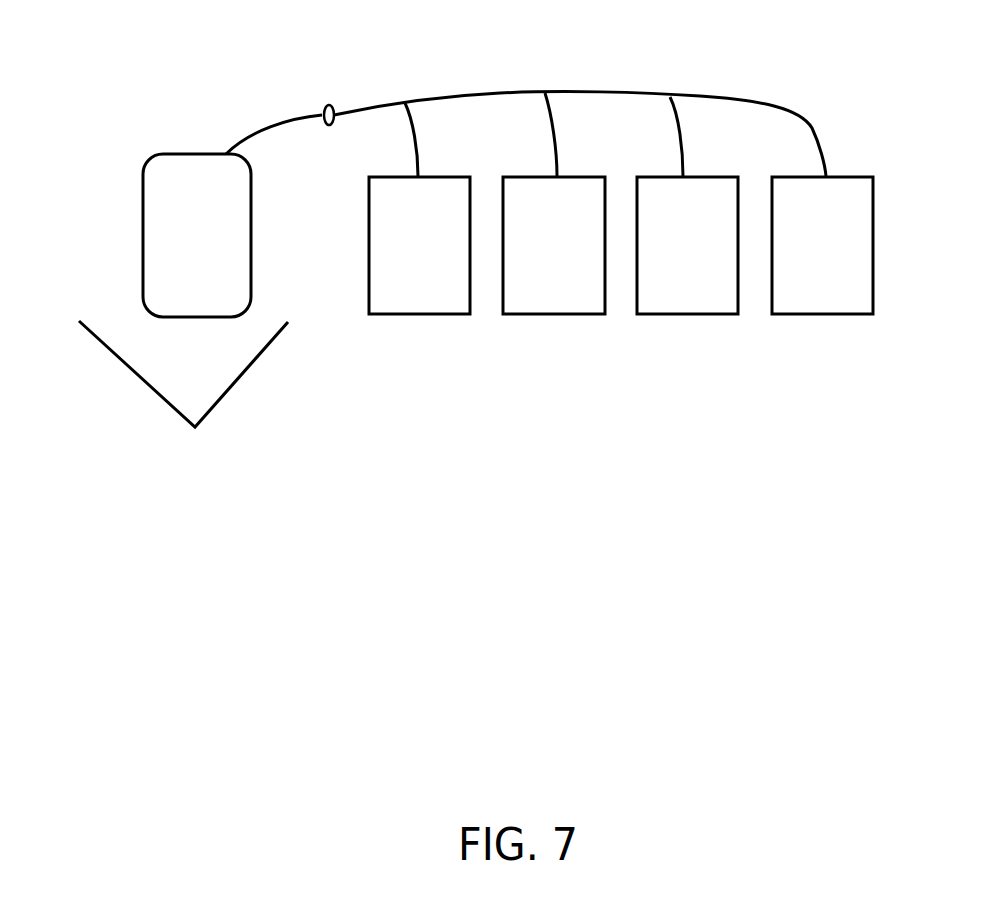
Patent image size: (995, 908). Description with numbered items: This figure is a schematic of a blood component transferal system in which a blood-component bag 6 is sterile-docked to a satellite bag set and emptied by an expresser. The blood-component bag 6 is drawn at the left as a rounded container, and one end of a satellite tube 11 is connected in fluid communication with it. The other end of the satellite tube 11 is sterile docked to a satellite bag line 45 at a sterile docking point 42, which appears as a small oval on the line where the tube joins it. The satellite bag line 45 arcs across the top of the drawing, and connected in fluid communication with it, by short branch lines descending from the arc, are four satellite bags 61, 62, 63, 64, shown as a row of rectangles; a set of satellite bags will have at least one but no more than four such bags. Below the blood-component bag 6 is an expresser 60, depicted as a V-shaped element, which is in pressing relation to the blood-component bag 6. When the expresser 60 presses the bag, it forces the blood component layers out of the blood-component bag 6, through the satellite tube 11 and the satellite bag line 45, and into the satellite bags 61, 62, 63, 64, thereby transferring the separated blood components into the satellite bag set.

The blood-component bag 6 is at (143, 228).
The expresser 60 is at (238, 384).
The satellite tube 11 is at (262, 132).
The sterile docking point 42 is at (327, 104).
The satellite bag line 45 is at (490, 93).
The satellite bag 61 is at (416, 316).
The satellite bag 62 is at (553, 316).
The satellite bag 63 is at (688, 316).
The satellite bag 64 is at (822, 316).